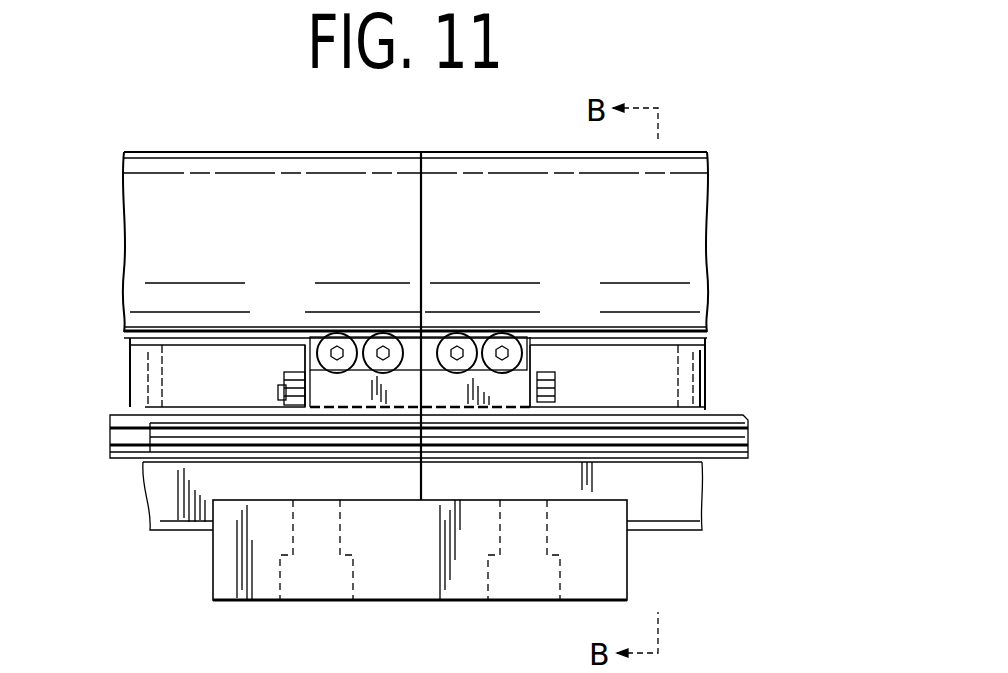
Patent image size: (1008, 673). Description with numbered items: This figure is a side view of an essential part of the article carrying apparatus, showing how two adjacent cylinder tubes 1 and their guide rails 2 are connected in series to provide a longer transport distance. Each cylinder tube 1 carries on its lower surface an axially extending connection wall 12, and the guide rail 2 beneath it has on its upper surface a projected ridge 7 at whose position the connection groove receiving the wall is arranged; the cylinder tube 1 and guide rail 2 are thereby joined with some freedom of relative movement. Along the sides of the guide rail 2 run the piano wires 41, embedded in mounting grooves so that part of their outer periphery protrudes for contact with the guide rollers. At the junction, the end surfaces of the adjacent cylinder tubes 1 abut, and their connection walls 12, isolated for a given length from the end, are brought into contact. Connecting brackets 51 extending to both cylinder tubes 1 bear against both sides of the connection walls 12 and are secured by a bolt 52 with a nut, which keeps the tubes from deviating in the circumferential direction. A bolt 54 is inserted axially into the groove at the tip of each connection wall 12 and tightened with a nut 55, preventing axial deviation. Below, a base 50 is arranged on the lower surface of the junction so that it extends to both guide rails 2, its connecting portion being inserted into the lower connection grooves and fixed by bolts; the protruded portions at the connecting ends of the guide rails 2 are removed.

The cylinder tube 1 is at (242, 173).
The guide rail 2 is at (143, 497).
The projected ridge 7 is at (140, 372).
The connection wall 12 is at (323, 386).
The piano wire 41 is at (112, 446).
The base 50 is at (418, 585).
The connecting bracket 51 is at (414, 350).
The bolt 52 is at (336, 345).
The bolt 54 is at (555, 392).
The nut 55 is at (284, 392).